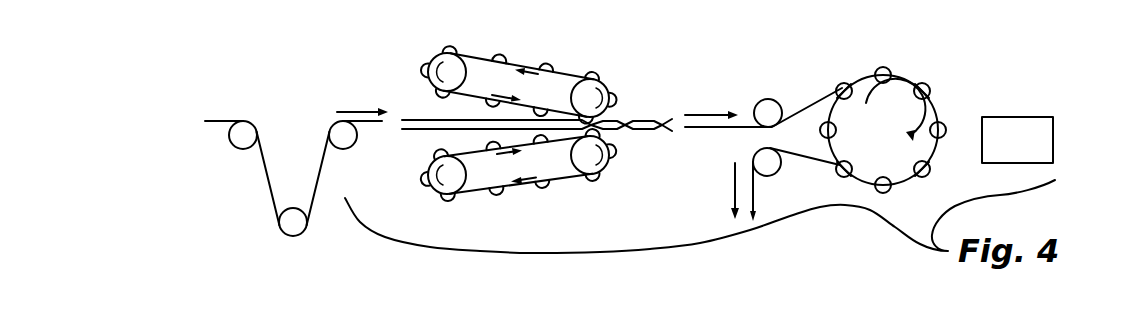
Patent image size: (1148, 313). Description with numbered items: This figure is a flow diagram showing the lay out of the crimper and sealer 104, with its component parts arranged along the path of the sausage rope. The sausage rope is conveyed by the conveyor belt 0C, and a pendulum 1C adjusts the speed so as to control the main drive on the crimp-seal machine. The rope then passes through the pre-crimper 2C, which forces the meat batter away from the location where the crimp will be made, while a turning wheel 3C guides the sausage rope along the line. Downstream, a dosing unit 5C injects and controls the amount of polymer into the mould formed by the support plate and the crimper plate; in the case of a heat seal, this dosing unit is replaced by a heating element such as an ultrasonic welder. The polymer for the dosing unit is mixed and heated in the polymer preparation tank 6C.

The conveyor belt 0C is at (218, 120).
The pendulum 1C is at (306, 118).
The crimper and sealer 104 is at (524, 120).
The pre-crimper 2C is at (537, 58).
The turning wheel 3C is at (577, 78).
The dosing unit 5C is at (900, 76).
The polymer preparation tank 6C is at (993, 117).